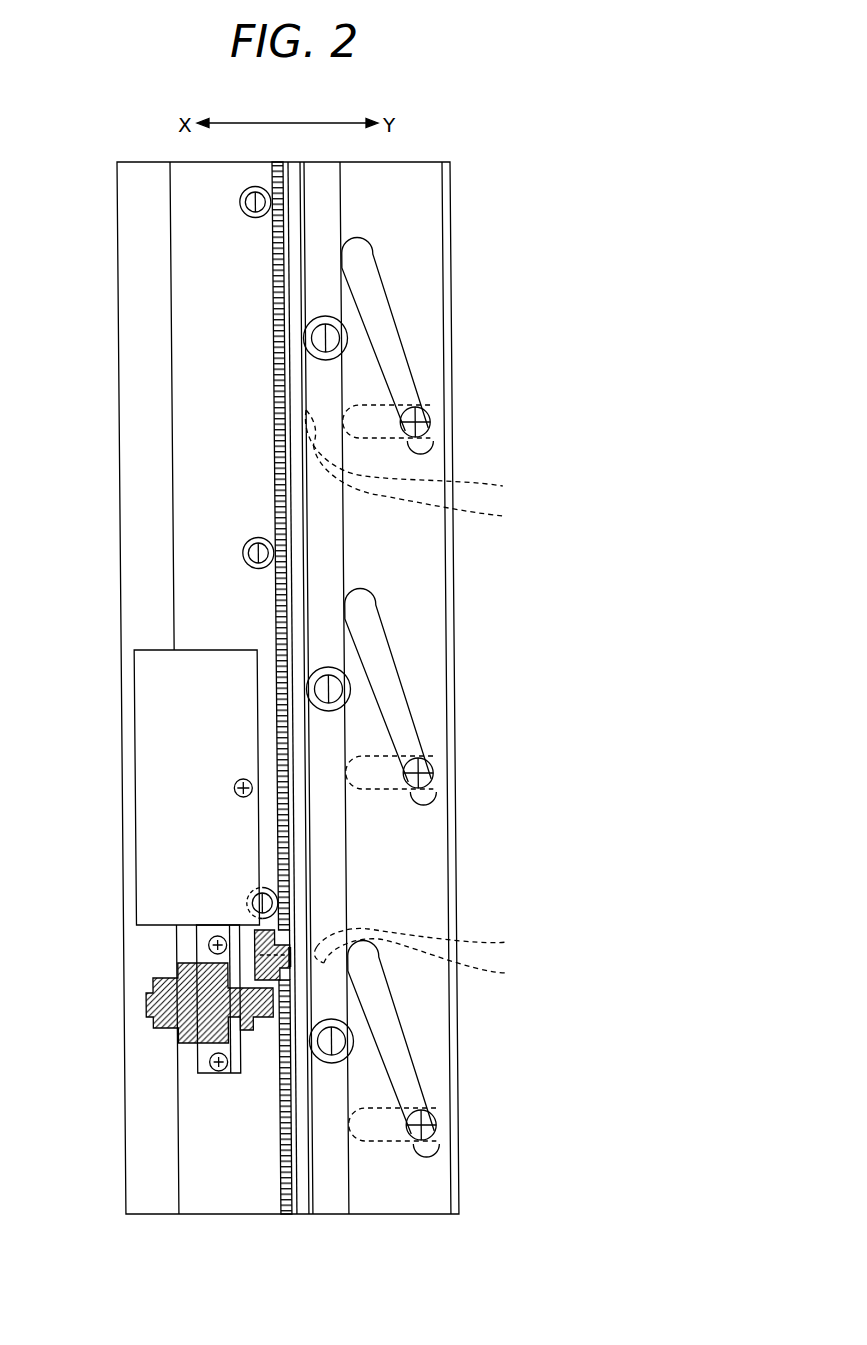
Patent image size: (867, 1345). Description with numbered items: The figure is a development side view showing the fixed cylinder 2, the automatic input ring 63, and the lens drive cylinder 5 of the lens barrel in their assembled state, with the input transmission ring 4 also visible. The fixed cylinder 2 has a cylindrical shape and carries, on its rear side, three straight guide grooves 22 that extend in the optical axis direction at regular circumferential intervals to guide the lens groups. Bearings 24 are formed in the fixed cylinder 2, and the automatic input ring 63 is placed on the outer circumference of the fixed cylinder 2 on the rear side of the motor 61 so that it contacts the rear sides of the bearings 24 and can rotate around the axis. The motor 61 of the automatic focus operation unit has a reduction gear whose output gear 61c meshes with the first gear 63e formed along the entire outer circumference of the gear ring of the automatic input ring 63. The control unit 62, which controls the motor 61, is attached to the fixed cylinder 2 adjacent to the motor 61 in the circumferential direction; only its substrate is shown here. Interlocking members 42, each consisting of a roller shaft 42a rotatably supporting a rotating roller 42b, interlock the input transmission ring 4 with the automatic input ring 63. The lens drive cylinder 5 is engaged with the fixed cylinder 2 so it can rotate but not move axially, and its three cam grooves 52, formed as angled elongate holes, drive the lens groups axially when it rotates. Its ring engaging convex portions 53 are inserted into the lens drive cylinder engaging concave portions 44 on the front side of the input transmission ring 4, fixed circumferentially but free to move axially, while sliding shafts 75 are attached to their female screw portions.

The fixed cylinder 2 is at (117, 388).
The input transmission ring 4 is at (333, 541).
The lens drive cylinder 5 is at (428, 258).
The straight guide groove 22 is at (432, 427).
The bearing 24 is at (239, 202).
The interlocking member 42 is at (453, 686).
The roller shaft 42a is at (340, 337).
The rotating roller 42b is at (350, 341).
The lens drive cylinder engaging concave portion 44 is at (425, 715).
The cam groove 52 is at (406, 385).
The ring engaging convex portion 53 is at (421, 686).
The motor 61 is at (160, 1012).
The output gear 61c is at (270, 1005).
The control unit 62 is at (158, 805).
The automatic input ring 63 is at (330, 870).
The first gear 63e is at (283, 960).
The sliding shaft 75 is at (430, 431).